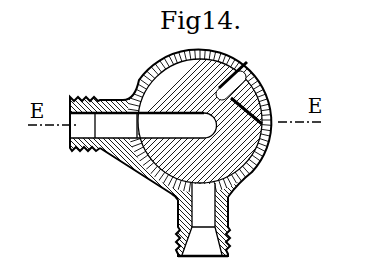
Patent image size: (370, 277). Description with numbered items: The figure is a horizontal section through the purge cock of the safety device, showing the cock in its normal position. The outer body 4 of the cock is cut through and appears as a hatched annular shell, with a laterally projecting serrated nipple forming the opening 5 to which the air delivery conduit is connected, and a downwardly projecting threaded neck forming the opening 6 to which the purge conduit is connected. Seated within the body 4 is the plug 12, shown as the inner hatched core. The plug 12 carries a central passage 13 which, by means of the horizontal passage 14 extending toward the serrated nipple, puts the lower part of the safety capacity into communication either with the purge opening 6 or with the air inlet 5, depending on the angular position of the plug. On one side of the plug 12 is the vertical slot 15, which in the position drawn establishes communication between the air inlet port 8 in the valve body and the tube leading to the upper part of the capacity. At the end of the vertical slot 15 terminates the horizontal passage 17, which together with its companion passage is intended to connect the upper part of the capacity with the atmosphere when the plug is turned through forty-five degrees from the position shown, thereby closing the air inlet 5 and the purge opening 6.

The body 4 is at (150, 152).
The opening 5 is at (218, 217).
The opening 6 is at (108, 150).
The air inlet port 8 is at (248, 73).
The plug 12 is at (225, 150).
The central passage 13 is at (200, 119).
The horizontal passage 14 is at (172, 121).
The vertical slot 15 is at (235, 88).
The horizontal passage 17 is at (262, 124).